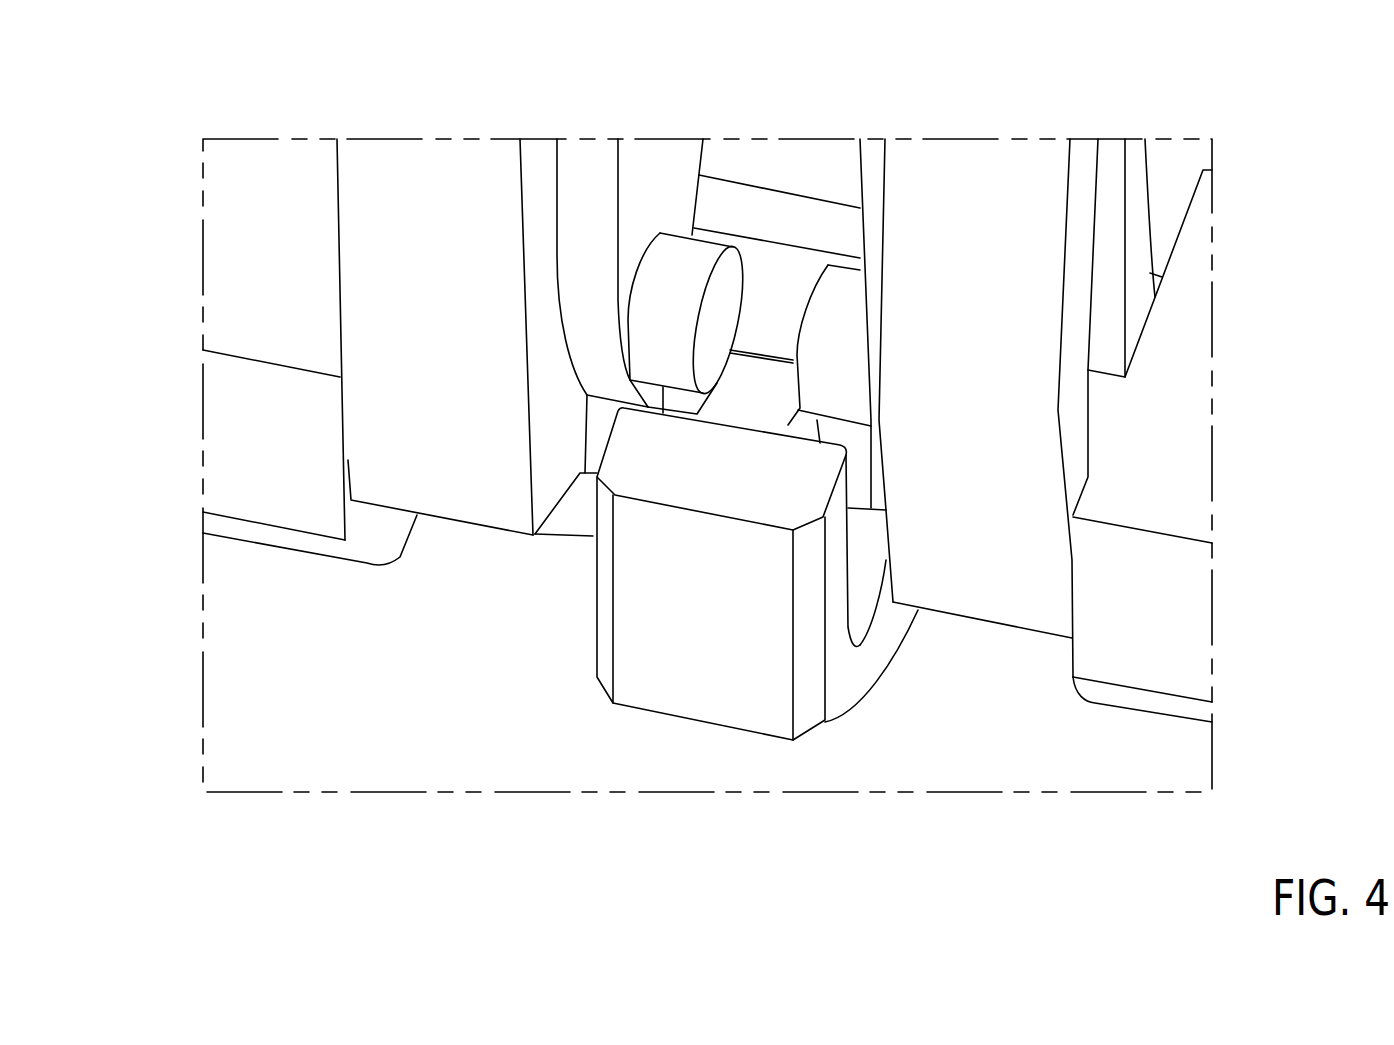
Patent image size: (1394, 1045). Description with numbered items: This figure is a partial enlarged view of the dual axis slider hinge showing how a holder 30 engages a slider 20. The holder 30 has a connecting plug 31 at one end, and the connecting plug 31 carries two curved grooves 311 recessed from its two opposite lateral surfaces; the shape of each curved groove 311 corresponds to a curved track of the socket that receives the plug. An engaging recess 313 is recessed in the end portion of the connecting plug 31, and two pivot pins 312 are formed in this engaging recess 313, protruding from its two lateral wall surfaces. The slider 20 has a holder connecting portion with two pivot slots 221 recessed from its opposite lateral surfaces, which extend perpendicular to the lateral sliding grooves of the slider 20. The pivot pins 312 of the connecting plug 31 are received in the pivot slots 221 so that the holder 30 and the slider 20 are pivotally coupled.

The holder 30 is at (132, 75).
The connecting plug 31 is at (421, 205).
The curved groove 311 is at (1108, 328).
The pivot pin 312 is at (680, 283).
The engaging recess 313 is at (810, 165).
The slider 20 is at (707, 743).
The pivot slot 221 is at (867, 607).